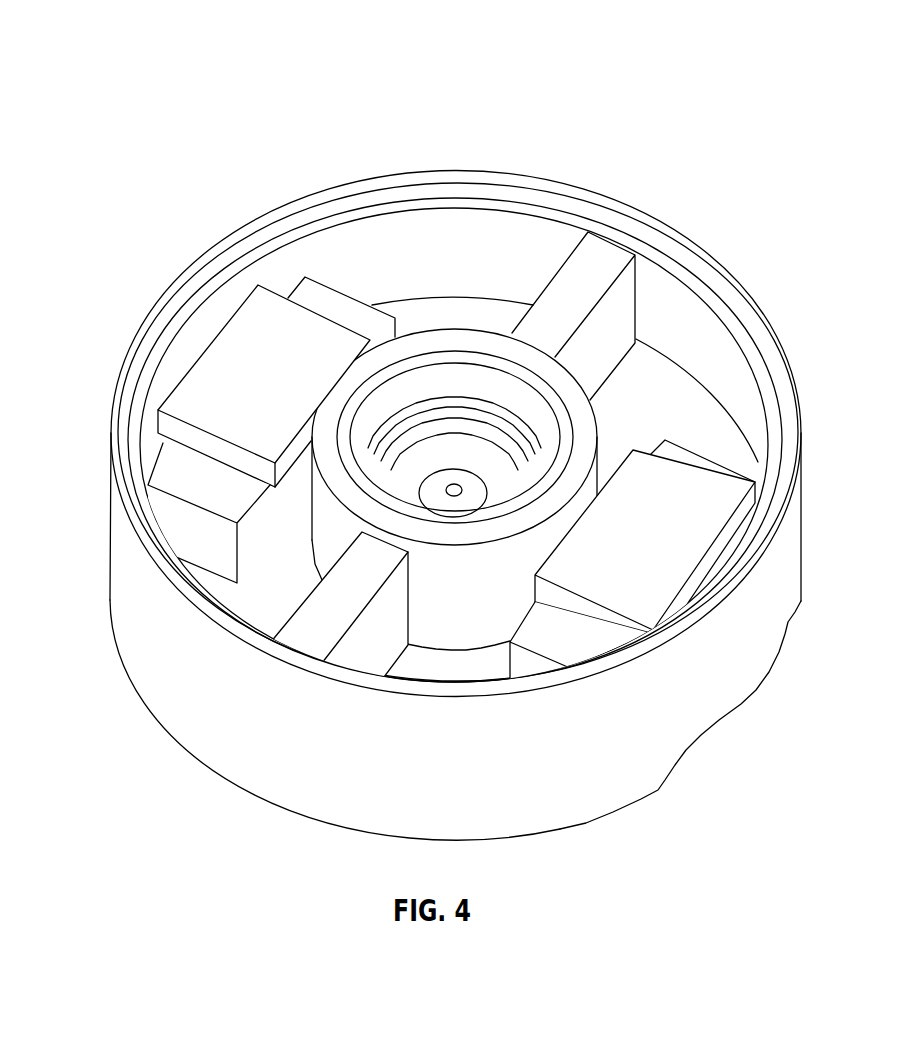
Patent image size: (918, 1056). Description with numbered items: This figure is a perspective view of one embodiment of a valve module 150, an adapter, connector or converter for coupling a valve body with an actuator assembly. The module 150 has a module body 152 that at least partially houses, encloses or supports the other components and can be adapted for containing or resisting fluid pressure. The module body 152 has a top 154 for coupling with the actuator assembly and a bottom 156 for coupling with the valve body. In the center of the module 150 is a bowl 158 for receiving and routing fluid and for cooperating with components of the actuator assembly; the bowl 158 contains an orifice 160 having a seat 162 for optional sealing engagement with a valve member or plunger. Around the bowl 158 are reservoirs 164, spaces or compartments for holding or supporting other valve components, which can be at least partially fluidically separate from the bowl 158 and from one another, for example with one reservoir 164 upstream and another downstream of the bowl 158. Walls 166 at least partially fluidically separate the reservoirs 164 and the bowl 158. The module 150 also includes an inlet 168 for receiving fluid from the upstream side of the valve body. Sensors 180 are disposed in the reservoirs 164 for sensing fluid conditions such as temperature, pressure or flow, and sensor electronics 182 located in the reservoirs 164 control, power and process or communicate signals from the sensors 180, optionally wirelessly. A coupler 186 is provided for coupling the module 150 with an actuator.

The module 150 is at (744, 50).
The module body 152 is at (800, 531).
The top 154 is at (150, 312).
The bottom 156 is at (262, 796).
The bowl 158 is at (494, 446).
The orifice 160 is at (456, 379).
The seat 162 is at (468, 493).
The reservoir 164 is at (673, 430).
The wall 166 is at (605, 250).
The inlet 168 is at (273, 480).
The sensor 180 is at (162, 478).
The sensor electronics 182 is at (258, 305).
The coupler 186 is at (453, 485).